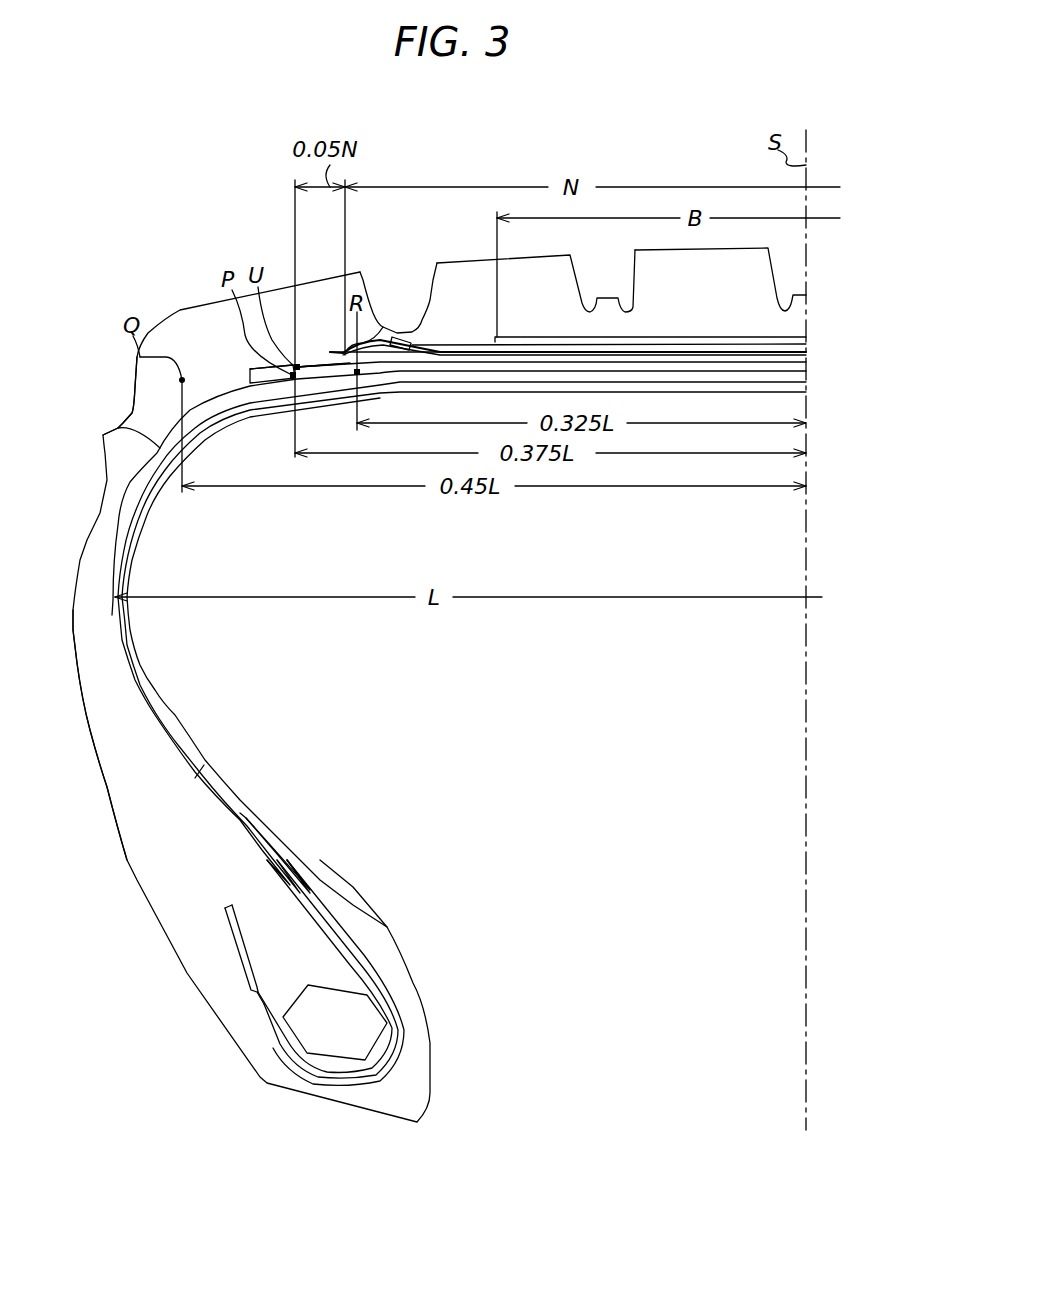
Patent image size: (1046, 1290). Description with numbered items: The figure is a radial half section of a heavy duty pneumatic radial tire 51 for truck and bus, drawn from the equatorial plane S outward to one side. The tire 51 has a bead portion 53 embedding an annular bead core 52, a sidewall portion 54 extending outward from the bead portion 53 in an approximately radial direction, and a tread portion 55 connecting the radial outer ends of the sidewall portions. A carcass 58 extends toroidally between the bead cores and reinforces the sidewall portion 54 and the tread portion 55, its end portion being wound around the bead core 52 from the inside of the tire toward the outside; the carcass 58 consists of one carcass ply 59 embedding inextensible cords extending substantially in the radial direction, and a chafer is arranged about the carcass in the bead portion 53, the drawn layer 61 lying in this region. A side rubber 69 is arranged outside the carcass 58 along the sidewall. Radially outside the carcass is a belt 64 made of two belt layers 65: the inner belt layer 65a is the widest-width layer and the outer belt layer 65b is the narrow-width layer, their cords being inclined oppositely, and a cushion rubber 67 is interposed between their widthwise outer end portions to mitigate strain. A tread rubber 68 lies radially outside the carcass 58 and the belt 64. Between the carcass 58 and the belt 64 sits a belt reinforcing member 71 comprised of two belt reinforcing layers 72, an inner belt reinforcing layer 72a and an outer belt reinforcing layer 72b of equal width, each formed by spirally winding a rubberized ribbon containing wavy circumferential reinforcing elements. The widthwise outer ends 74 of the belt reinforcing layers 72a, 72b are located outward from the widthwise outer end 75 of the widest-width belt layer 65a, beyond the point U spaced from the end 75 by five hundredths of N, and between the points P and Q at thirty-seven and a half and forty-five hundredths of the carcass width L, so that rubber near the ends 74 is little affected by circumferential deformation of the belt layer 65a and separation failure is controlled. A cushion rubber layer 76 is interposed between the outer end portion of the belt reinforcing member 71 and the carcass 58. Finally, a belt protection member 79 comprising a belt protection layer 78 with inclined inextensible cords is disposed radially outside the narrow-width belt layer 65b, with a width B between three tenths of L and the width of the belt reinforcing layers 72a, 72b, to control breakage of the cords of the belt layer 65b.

The heavy duty pneumatic radial tire 51 is at (175, 303).
The bead core 52 is at (350, 1023).
The bead portion 53 is at (387, 932).
The sidewall portion 54 is at (147, 672).
The tread portion 55 is at (475, 255).
The carcass 58 is at (175, 730).
The carcass ply 59 is at (203, 770).
The chafer layer 61 is at (270, 838).
The belt 64 is at (430, 295).
The belt layer 65 is at (408, 347).
The inner belt layer 65a is at (443, 360).
The outer belt layer 65b is at (467, 350).
The cushion rubber 67 is at (380, 325).
The tread rubber 68 is at (648, 253).
The side rubber 69 is at (113, 790).
The belt reinforcing member 71 is at (305, 366).
The belt reinforcing layer 72 is at (762, 365).
The inner belt reinforcing layer 72a is at (250, 388).
The outer belt reinforcing layer 72b is at (262, 366).
The widthwise outer end of belt reinforcing layers 74 is at (250, 378).
The widthwise outer end of widest-width belt layer 75 is at (308, 362).
The cushion rubber layer 76 is at (118, 428).
The belt protection layer 78 is at (543, 338).
The belt protection member 79 is at (645, 336).